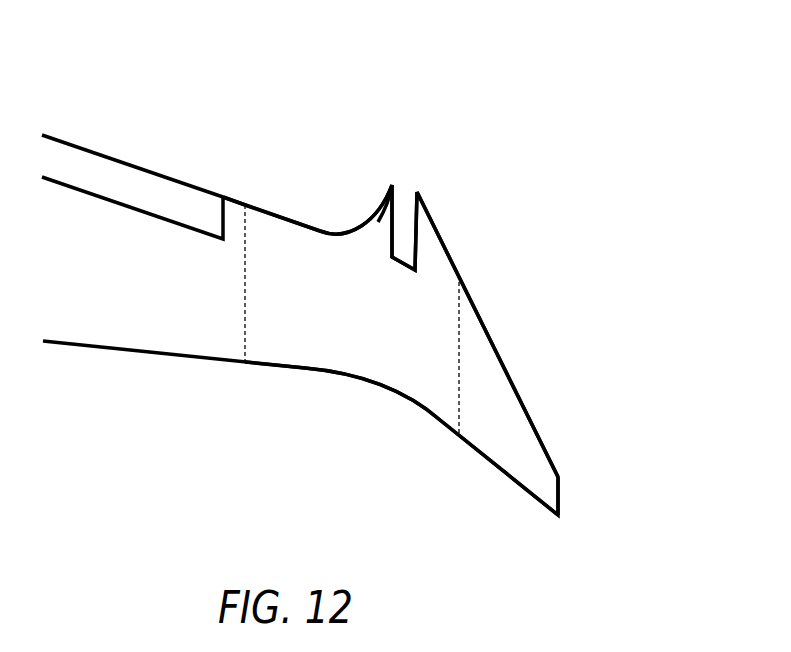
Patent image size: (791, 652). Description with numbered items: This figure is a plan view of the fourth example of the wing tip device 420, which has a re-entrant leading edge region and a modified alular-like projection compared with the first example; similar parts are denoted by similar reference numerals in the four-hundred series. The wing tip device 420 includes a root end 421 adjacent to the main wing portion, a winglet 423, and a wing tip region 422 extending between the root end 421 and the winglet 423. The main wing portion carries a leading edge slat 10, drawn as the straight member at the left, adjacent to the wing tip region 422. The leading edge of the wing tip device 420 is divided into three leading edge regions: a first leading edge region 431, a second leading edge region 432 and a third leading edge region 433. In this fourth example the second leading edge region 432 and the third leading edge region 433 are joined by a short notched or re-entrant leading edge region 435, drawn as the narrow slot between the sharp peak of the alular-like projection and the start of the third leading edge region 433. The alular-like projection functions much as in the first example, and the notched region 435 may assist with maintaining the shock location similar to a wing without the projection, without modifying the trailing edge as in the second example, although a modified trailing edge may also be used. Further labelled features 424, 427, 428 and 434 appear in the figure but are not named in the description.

The leading edge slat 10 is at (103, 173).
The wing tip device 420 is at (507, 285).
The root end 421 is at (243, 320).
The wing tip region 422 is at (315, 305).
The winglet 423 is at (500, 403).
The trailing end 424 is at (560, 490).
The curved lower surface 427 is at (380, 385).
The second boundary 428 is at (460, 393).
The first leading edge region 431 is at (300, 222).
The second leading edge region 432 is at (385, 203).
The third leading edge region 433 is at (443, 242).
The recess 434 is at (353, 232).
The notched or re-entrant leading edge region 435 is at (402, 257).